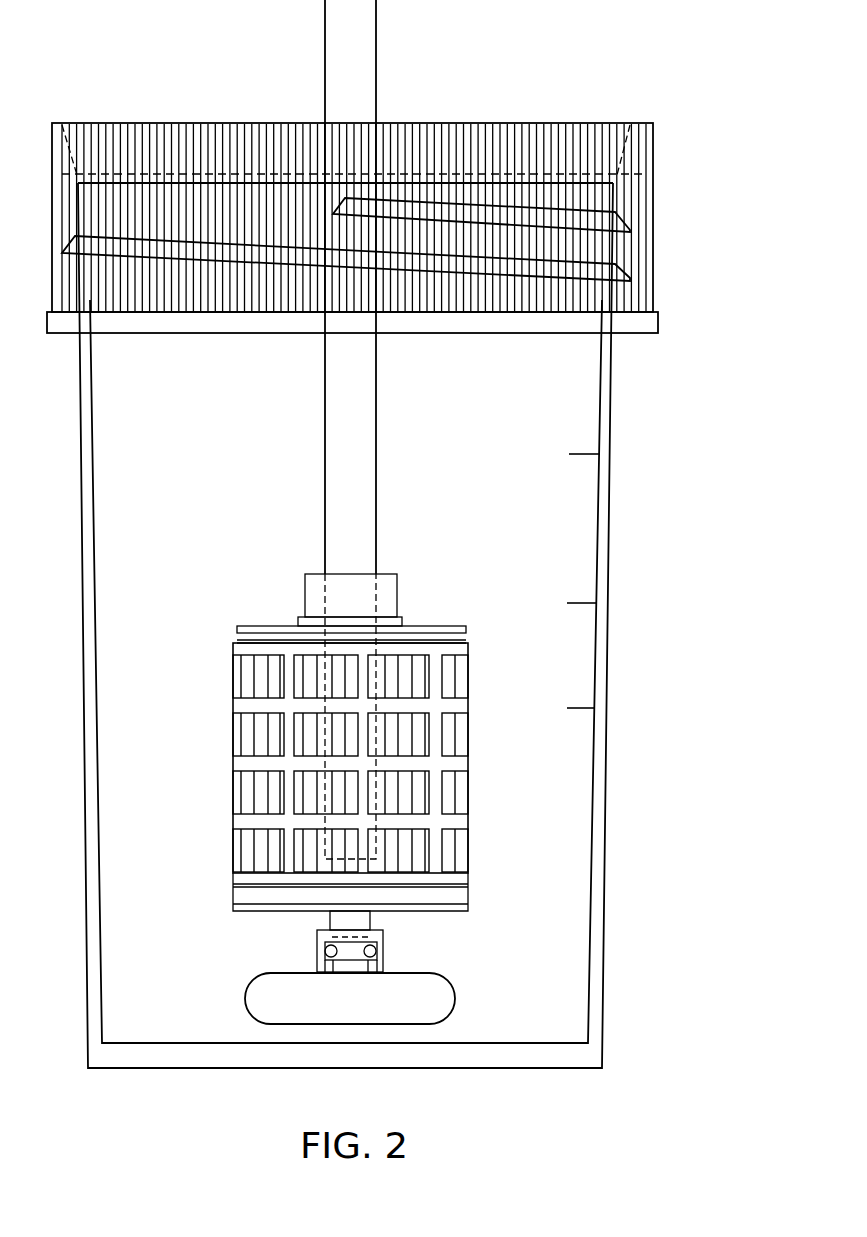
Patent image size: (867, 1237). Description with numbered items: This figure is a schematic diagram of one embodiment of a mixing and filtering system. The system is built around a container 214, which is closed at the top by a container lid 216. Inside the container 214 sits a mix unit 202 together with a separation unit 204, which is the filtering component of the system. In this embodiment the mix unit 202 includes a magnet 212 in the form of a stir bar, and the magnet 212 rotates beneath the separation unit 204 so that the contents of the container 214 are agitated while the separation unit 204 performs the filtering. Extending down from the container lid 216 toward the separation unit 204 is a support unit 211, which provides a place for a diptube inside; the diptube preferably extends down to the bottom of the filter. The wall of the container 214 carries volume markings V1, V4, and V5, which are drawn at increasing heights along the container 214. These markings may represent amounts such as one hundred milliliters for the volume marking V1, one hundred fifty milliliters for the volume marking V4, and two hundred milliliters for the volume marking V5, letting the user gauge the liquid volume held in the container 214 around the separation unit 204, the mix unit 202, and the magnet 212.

The mix unit 202 is at (450, 984).
The separation unit 204 is at (458, 796).
The support unit 211 is at (376, 394).
The magnet 212 is at (256, 998).
The container 214 is at (600, 467).
The container lid 216 is at (653, 268).
The volume marking V5 is at (505, 454).
The volume marking V4 is at (500, 603).
The volume marking V1 is at (500, 708).